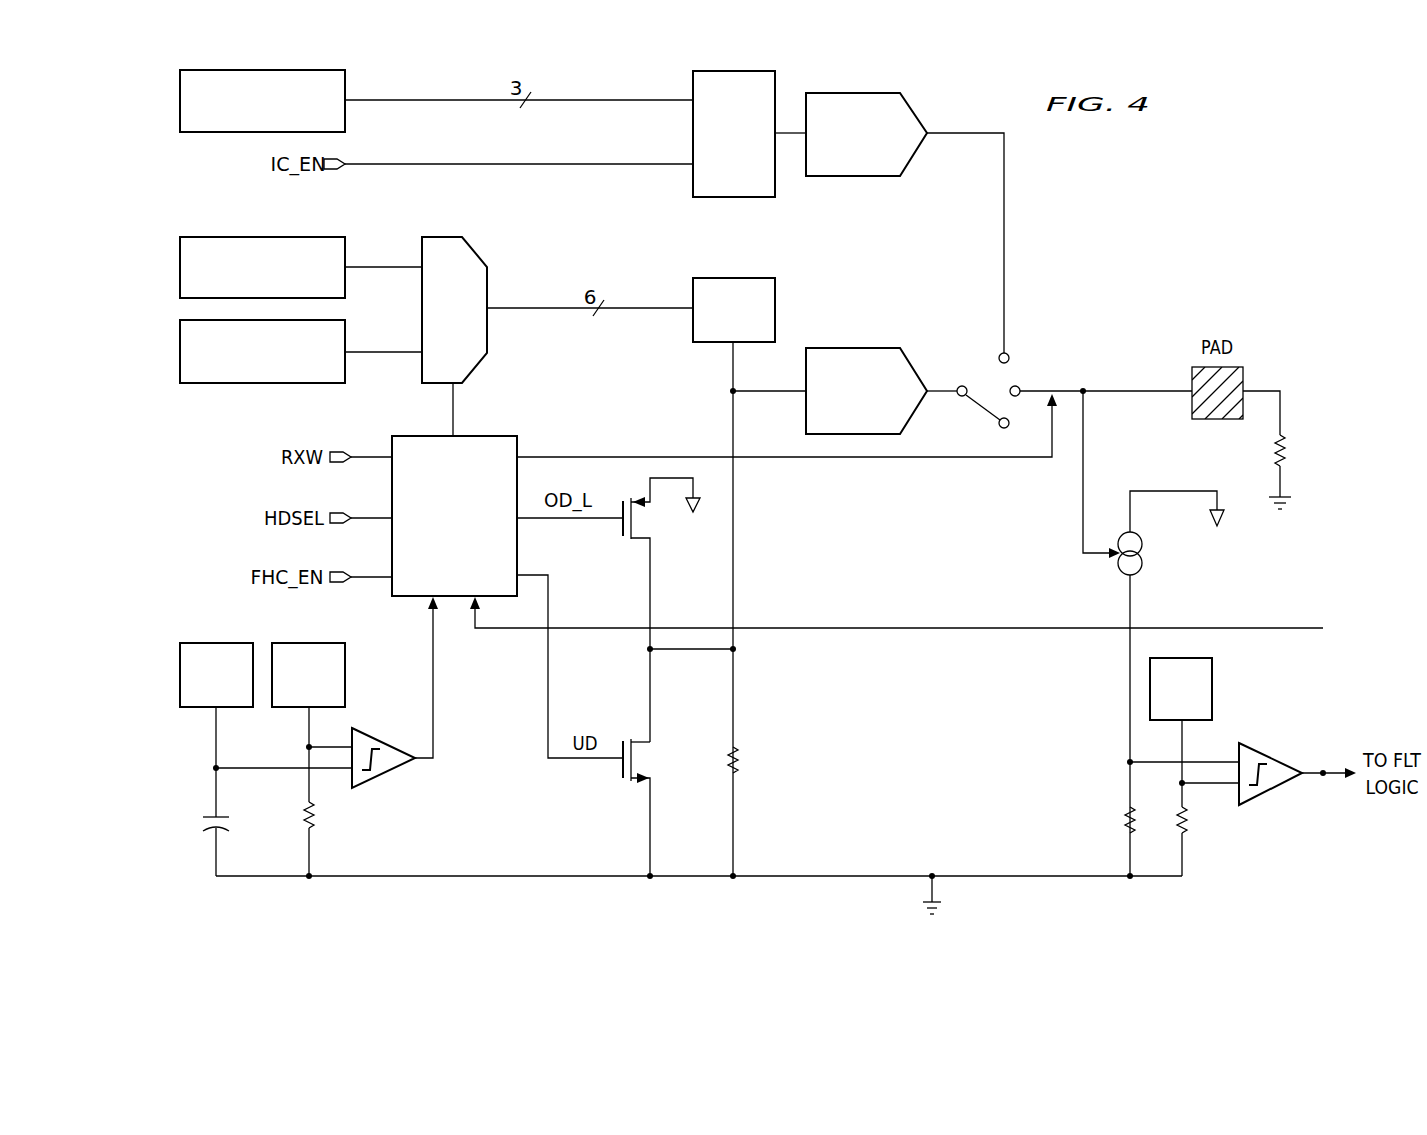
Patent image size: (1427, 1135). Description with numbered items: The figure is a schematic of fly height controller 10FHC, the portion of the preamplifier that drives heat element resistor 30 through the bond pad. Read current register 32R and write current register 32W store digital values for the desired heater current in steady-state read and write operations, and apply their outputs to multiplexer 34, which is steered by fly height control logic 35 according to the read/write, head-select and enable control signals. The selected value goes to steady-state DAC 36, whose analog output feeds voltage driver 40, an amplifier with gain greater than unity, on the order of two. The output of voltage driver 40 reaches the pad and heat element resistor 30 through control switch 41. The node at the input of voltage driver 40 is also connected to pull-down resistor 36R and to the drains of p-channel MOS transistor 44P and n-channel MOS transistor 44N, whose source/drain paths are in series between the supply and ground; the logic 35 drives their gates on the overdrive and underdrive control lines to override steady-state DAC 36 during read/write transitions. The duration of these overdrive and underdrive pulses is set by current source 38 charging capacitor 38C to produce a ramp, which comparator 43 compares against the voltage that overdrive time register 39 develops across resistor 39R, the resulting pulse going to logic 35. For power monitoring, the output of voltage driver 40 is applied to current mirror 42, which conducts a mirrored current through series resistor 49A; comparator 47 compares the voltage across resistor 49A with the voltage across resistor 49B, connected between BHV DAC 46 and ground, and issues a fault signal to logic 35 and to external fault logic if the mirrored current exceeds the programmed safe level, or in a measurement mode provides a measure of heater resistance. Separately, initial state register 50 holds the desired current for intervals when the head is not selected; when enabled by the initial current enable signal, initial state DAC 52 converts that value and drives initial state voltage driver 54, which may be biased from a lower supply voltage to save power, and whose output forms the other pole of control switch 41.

The fly height controller 10FHC is at (1224, 164).
The initial state register 50 is at (180, 90).
The initial state DAC 52 is at (727, 197).
The initial state voltage driver 54 is at (929, 113).
The read current register 32R is at (180, 256).
The write current register 32W is at (180, 339).
The multiplexer 34 is at (442, 237).
The steady-state digital-to-analog converter 36 is at (743, 278).
The pull-down resistor 36R is at (742, 762).
The voltage driver 40 is at (912, 367).
The control switch 41 is at (1037, 391).
The heat element resistor 30 is at (1288, 448).
The current mirror 42 is at (1142, 569).
The fly height control logic 35 is at (441, 564).
The p-channel MOS transistor 44P is at (620, 530).
The n-channel MOS transistor 44N is at (620, 771).
The current source 38 is at (180, 678).
The capacitor 38C is at (203, 822).
The overdrive time register 39 is at (345, 680).
The resistor 39R is at (305, 818).
The comparator 43 is at (384, 779).
The BHV DAC 46 is at (1212, 690).
The comparator 47 is at (1275, 790).
The series resistor 49A is at (1122, 822).
The resistor 49B is at (1193, 822).